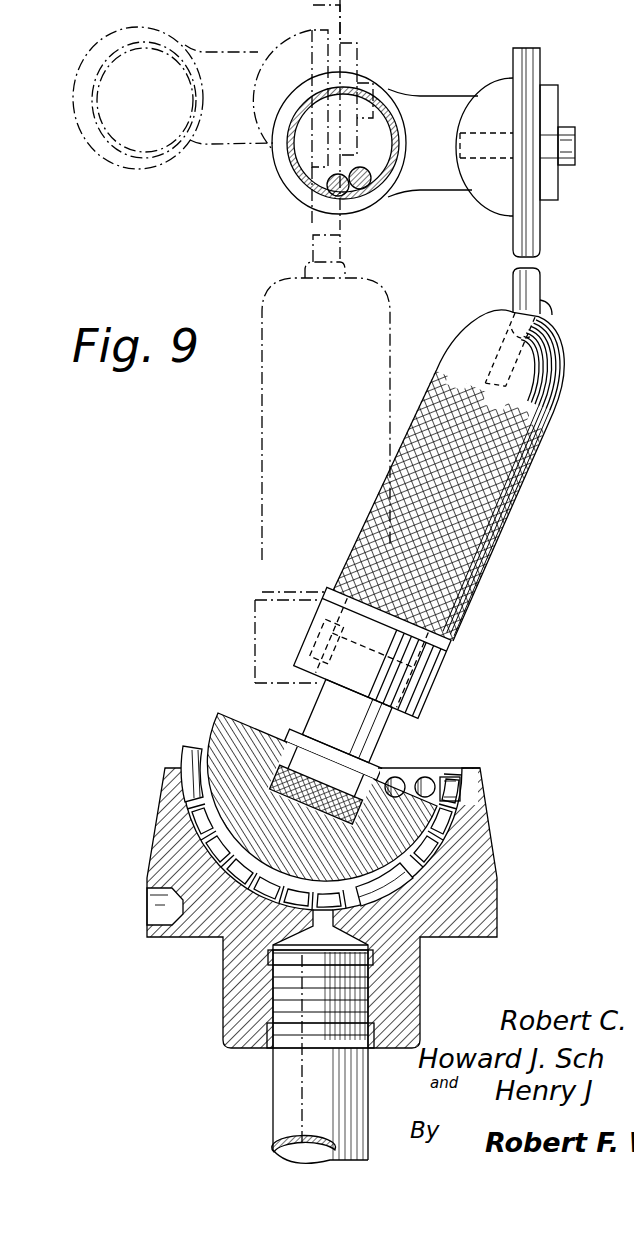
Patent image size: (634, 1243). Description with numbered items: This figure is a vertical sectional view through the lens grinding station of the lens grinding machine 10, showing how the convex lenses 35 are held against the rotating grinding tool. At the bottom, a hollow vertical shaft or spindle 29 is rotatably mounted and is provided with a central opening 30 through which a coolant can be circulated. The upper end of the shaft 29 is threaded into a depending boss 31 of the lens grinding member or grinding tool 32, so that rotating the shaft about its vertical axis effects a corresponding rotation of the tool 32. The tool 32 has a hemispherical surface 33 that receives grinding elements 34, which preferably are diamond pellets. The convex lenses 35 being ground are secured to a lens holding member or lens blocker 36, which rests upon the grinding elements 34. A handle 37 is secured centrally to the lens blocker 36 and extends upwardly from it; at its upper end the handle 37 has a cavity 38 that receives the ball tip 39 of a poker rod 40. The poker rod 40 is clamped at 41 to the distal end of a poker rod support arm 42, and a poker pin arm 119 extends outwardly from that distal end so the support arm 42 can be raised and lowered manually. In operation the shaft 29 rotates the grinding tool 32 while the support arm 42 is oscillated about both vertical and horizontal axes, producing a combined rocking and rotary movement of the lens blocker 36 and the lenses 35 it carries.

The apparatus 10 is at (624, 607).
The hollow vertical shaft 29 is at (273, 1093).
The central opening 30 is at (308, 1100).
The depending boss 31 is at (405, 990).
The lens grinding member 32 is at (497, 891).
The hemispherical surface 33 is at (450, 773).
The grinding elements 34 is at (213, 817).
The convex lenses 35 is at (210, 770).
The lens holding member 36 is at (243, 715).
The handle 37 is at (360, 343).
The cavity 38 is at (550, 352).
The ball tip 39 is at (545, 312).
The poker rod 40 is at (542, 256).
The clamp 41 is at (550, 108).
The poker rod support arm 42 is at (228, 140).
The poker pin arm 119 is at (108, 163).